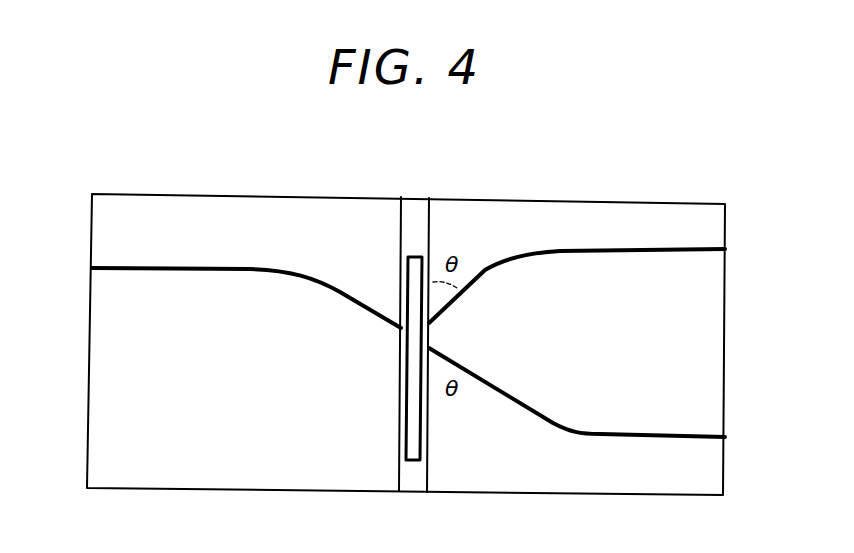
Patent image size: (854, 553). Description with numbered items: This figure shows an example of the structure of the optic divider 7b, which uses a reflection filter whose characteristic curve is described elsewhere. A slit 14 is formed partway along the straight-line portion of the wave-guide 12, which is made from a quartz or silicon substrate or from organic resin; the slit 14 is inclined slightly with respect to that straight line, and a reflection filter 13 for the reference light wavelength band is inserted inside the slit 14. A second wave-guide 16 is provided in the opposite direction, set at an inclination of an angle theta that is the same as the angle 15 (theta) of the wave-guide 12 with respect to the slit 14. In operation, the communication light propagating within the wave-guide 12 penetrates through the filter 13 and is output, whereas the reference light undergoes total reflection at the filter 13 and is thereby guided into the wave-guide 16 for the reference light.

The optic divider 7b is at (174, 197).
The wave-guide 12 is at (388, 322).
The reflection filter 13 is at (412, 408).
The slit 14 is at (411, 217).
The angle 15 is at (428, 362).
The wave-guide 16 is at (565, 248).